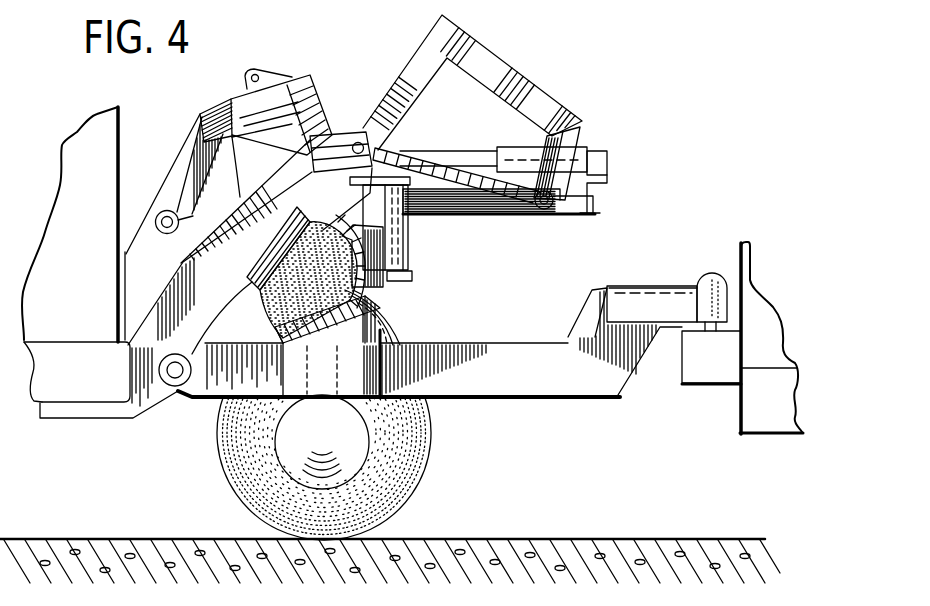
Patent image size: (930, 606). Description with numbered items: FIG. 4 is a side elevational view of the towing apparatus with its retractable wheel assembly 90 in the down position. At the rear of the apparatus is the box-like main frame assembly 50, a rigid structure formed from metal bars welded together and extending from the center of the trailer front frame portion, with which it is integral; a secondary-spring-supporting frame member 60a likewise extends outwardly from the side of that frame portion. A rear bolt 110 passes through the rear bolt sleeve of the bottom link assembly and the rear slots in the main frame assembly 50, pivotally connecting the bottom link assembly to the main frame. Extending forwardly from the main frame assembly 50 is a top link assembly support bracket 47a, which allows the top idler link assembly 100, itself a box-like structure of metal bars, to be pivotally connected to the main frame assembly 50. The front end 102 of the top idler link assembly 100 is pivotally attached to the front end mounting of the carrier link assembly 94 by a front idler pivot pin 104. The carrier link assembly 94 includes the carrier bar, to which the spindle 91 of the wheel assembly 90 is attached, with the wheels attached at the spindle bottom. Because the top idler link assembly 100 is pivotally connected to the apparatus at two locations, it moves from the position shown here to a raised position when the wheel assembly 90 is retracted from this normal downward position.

The main frame assembly 50 is at (194, 147).
The rear bolt 110 is at (163, 212).
The top link assembly support bracket 47a is at (344, 133).
The top idler link assembly 100 is at (413, 57).
The front end 102 is at (433, 152).
The carrier link assembly 94 is at (497, 215).
The front idler pivot pin 104 is at (553, 214).
The spindle 91 is at (393, 308).
The retractable wheel assembly 90 is at (444, 464).
The secondary-spring-supporting frame member 60a is at (153, 407).